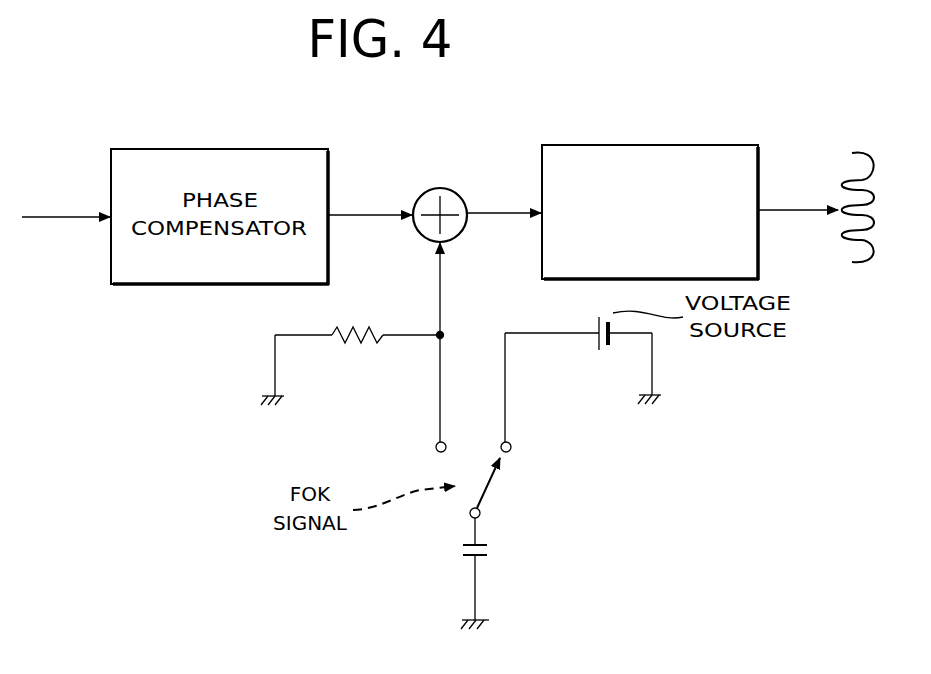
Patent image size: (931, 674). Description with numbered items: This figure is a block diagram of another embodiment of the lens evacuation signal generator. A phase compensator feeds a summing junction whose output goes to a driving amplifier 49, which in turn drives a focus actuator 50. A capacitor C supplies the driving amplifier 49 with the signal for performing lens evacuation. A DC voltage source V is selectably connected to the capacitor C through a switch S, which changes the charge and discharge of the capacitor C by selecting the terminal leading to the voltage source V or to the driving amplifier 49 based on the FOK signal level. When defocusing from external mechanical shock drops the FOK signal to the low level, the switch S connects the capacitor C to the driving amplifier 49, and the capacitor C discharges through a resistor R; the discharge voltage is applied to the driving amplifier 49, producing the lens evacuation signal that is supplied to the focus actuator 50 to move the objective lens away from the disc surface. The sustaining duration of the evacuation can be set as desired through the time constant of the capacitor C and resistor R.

The driving amplifier 49 is at (642, 145).
The focus actuator 50 is at (830, 172).
The resistor R is at (357, 352).
The capacitor C is at (462, 569).
The switch S is at (477, 480).
The DC voltage source V is at (578, 356).